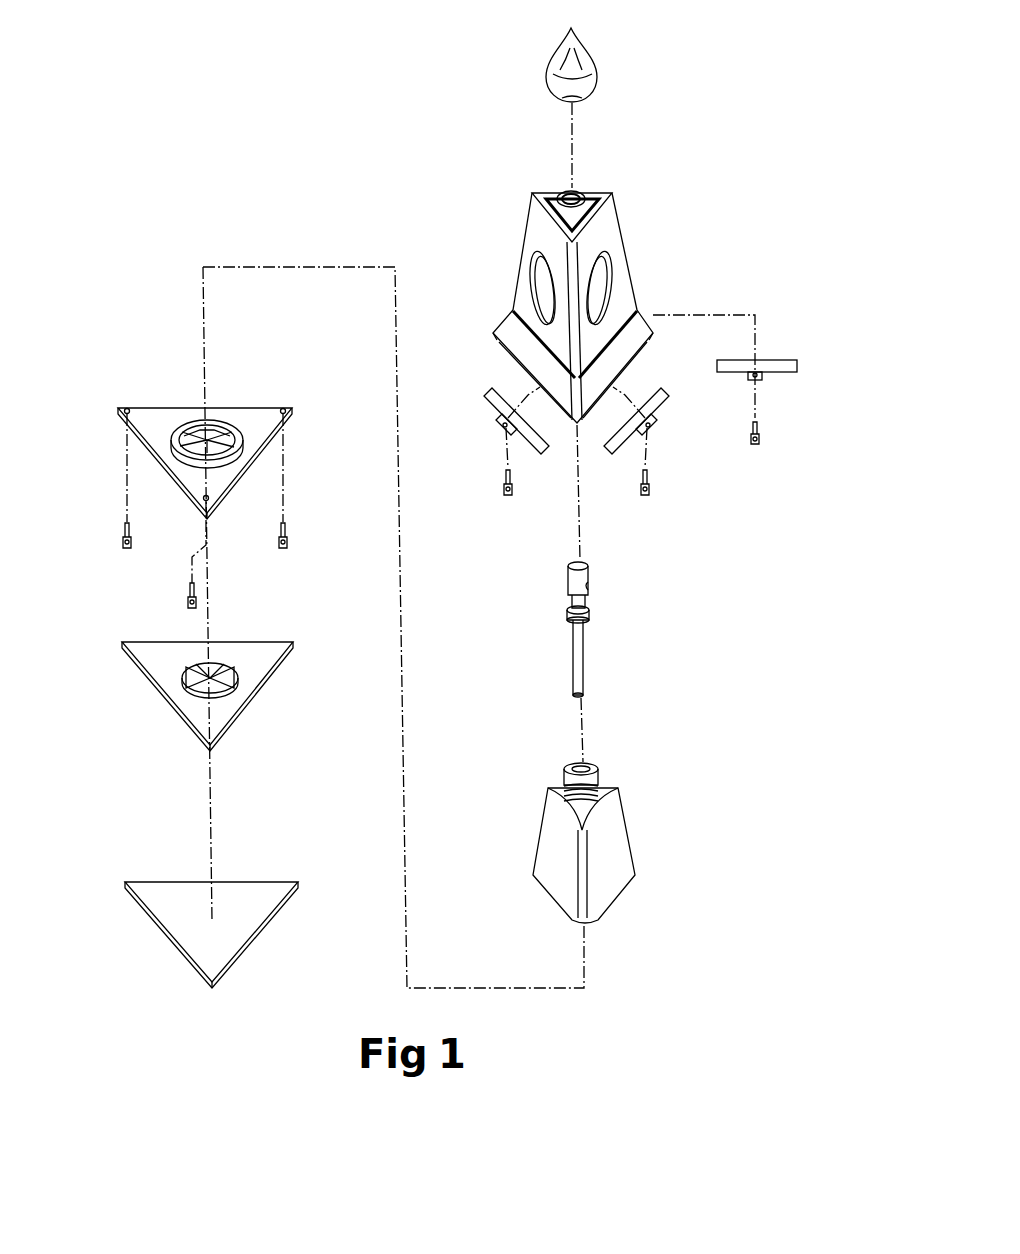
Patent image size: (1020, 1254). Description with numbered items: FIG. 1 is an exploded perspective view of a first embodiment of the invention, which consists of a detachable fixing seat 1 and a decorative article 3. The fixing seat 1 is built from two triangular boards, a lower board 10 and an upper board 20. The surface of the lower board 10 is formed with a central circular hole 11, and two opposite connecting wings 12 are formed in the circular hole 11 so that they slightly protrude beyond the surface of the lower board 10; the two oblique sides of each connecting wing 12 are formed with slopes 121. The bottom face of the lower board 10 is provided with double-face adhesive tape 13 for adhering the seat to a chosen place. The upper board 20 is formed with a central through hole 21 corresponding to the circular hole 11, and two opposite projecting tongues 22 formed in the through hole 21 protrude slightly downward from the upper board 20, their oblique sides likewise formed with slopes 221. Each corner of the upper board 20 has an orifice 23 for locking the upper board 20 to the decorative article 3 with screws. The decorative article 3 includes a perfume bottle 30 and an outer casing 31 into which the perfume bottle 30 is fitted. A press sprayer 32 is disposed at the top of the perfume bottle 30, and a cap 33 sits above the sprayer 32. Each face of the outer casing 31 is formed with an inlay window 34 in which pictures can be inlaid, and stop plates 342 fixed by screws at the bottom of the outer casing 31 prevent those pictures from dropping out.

The detachable fixing seat 1 is at (58, 573).
The lower board 10 is at (163, 682).
The central circular hole 11 is at (218, 693).
The connecting wings 12 is at (190, 673).
The slopes 121 is at (195, 693).
The double-face adhesive tape 13 is at (170, 925).
The upper board 20 is at (172, 473).
The central through hole 21 is at (172, 437).
The projecting tongues 22 is at (217, 430).
The slopes 221 is at (218, 445).
The orifice 23 is at (125, 407).
The decorative article 3 is at (845, 450).
The perfume bottle 30 is at (621, 848).
The outer casing 31 is at (525, 248).
The press sprayer 32 is at (563, 600).
The cap 33 is at (598, 70).
The inlay window 34 is at (540, 284).
The stop plates 342 is at (500, 404).